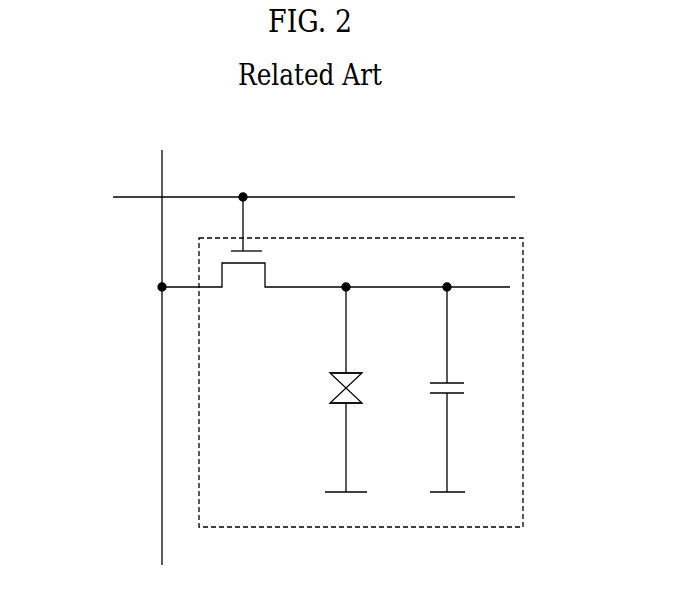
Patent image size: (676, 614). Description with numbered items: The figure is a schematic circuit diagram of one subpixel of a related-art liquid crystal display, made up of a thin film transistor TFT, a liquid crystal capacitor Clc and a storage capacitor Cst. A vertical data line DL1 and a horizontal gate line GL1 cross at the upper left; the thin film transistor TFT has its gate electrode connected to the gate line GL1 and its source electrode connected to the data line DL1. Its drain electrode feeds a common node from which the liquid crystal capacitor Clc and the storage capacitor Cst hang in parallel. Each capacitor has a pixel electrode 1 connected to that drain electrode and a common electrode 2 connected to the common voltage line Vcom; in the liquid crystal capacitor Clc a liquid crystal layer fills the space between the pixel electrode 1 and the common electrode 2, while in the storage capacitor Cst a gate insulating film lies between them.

The pixel electrode 1 is at (344, 372).
The common electrode 2 is at (343, 406).
The data line DL1 is at (161, 346).
The gate line GL1 is at (297, 197).
The thin film transistor TFT is at (336, 255).
The liquid crystal capacitor Clc is at (363, 389).
The storage capacitor Cst is at (465, 389).
The common voltage line Vcom is at (345, 502).